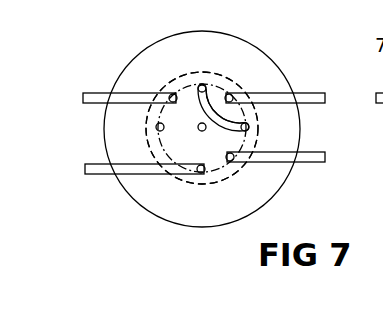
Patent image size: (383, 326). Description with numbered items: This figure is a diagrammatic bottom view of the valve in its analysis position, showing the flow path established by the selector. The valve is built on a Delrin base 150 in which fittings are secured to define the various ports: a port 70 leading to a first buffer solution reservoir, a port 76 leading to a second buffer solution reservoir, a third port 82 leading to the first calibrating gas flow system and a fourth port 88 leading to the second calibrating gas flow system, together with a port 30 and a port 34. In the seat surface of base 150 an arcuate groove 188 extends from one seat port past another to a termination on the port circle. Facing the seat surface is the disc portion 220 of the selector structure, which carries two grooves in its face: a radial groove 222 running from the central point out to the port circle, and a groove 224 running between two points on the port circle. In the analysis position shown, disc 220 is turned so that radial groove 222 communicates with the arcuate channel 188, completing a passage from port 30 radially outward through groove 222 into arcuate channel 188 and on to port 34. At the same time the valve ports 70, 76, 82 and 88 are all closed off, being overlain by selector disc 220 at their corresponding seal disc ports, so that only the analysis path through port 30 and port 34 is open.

The valve base 150 is at (254, 46).
The disc portion 220 is at (167, 82).
The radial groove 222 is at (223, 118).
The groove 224 is at (157, 109).
The port 70 is at (97, 93).
The port 76 is at (306, 93).
The third port 82 is at (97, 175).
The fourth port 88 is at (317, 163).
The port 34 is at (201, 84).
The arcuate groove 188 is at (218, 106).
The port 30 is at (198, 131).